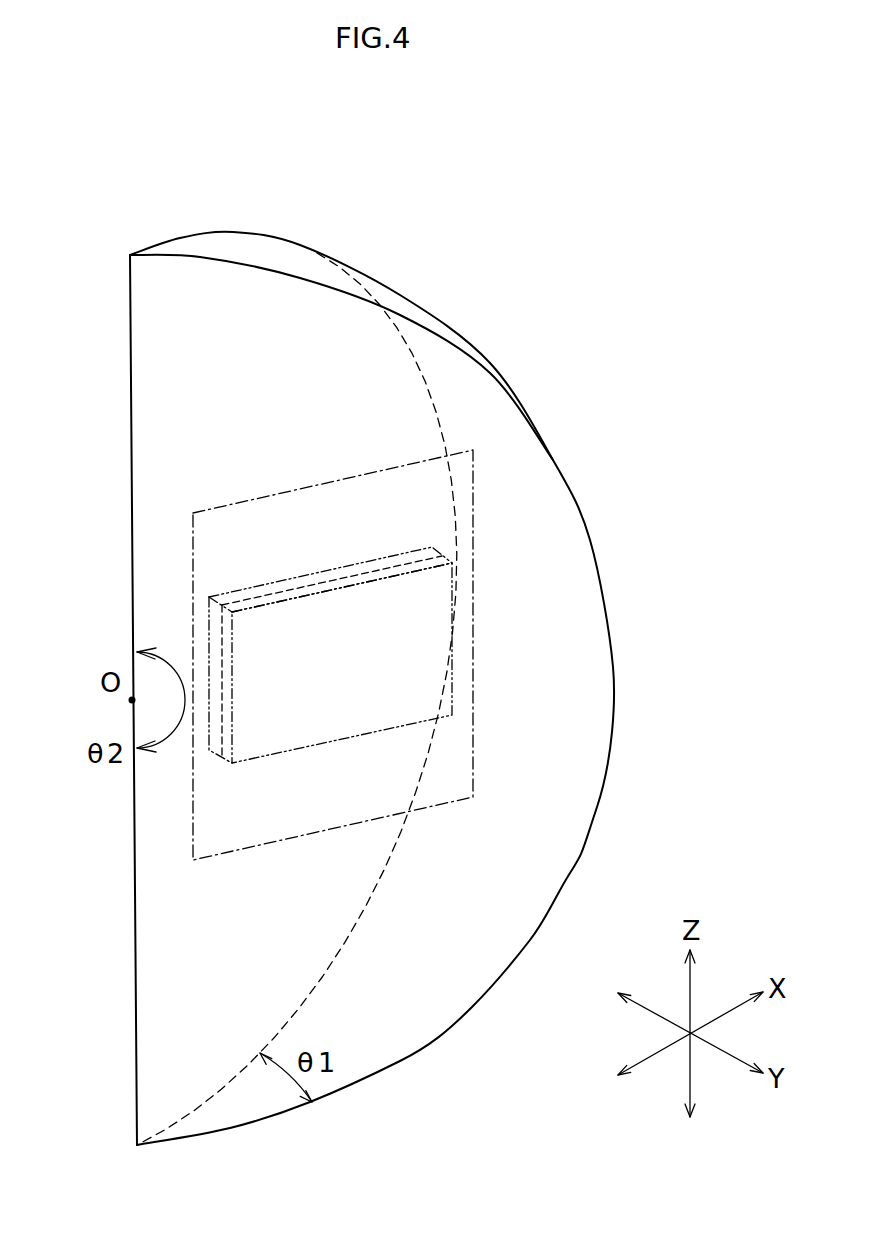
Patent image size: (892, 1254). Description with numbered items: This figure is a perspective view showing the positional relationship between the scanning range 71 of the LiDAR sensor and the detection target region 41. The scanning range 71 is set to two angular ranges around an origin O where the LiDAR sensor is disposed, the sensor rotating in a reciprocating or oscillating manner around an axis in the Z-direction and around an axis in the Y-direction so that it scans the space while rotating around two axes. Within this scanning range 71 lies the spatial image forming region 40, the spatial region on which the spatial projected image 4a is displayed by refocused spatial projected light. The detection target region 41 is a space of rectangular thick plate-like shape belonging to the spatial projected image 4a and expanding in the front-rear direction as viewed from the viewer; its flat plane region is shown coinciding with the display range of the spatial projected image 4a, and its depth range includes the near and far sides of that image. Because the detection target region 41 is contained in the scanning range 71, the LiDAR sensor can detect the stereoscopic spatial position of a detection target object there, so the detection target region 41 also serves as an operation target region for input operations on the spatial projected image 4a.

The scanning range 71 is at (395, 290).
The spatial projected image 4a is at (403, 562).
The spatial image forming region 40 is at (473, 602).
The detection target region 41 is at (452, 692).